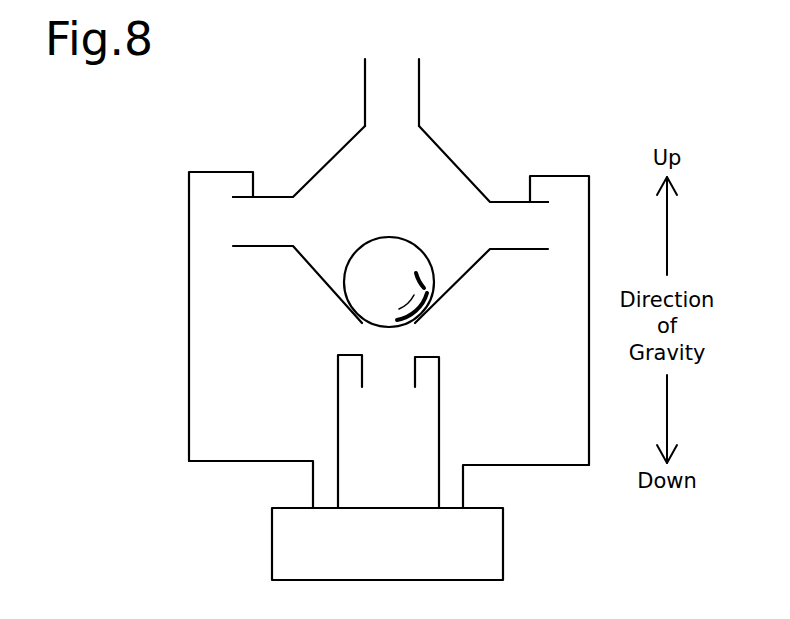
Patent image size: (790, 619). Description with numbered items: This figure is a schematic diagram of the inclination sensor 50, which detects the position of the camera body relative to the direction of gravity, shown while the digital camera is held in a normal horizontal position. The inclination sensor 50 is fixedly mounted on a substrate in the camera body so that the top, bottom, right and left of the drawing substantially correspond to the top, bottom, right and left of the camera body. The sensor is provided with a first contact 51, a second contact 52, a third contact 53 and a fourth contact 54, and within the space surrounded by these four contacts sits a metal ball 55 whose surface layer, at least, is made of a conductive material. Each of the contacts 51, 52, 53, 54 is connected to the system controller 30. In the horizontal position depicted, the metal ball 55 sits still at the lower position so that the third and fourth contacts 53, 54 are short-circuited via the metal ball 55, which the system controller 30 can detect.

The inclination sensor 50 is at (389, 264).
The first contact 51 is at (330, 160).
The second contact 52 is at (469, 180).
The third contact 53 is at (309, 264).
The fourth contact 54 is at (450, 289).
The metal ball 55 is at (388, 252).
The system controller 30 is at (503, 541).